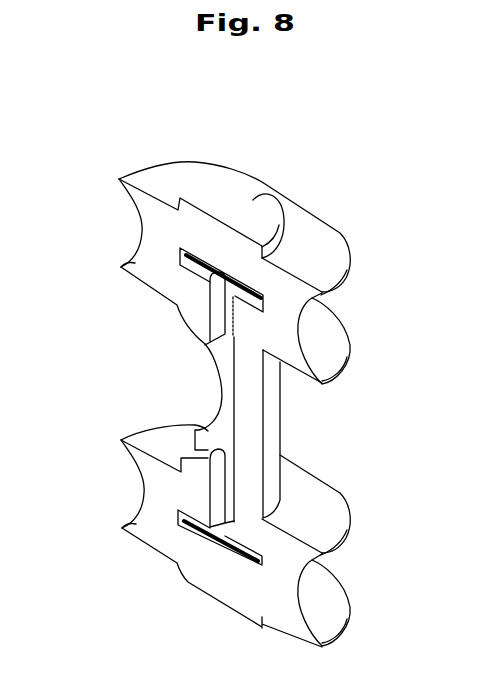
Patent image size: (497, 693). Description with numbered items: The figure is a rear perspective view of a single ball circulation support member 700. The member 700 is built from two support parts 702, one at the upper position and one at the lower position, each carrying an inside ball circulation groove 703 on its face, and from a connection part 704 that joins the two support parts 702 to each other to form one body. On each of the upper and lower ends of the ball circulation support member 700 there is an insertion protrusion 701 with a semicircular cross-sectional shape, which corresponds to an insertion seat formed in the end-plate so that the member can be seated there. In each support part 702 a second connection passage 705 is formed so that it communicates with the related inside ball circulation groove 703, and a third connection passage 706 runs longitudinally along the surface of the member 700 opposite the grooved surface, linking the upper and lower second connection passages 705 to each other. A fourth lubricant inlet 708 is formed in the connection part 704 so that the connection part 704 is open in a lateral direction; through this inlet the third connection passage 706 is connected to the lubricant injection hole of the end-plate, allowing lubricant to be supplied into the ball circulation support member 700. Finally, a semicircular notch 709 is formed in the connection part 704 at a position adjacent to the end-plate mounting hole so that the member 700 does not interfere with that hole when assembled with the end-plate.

The ball circulation support member 700 is at (227, 110).
The insertion protrusion 701 is at (254, 200).
The support part 702 is at (323, 246).
The inside ball circulation groove 703 is at (328, 326).
The connection part 704 is at (275, 418).
The second connection passage 705 is at (225, 542).
The third connection passage 706 is at (219, 506).
The fourth lubricant inlet 708 is at (215, 379).
The semicircular notch 709 is at (218, 407).